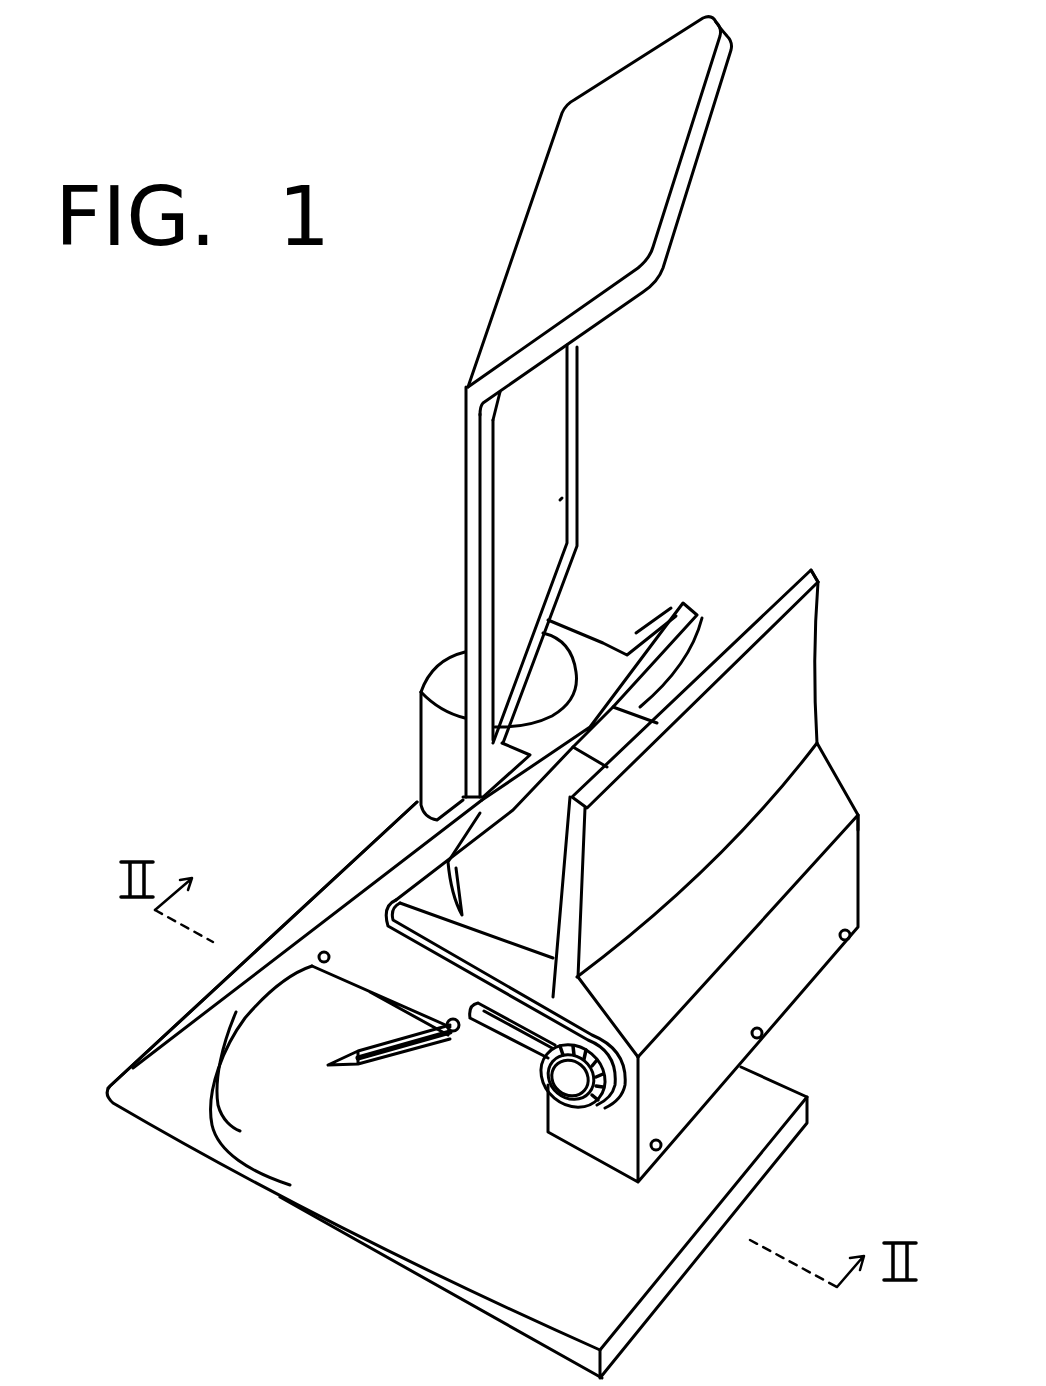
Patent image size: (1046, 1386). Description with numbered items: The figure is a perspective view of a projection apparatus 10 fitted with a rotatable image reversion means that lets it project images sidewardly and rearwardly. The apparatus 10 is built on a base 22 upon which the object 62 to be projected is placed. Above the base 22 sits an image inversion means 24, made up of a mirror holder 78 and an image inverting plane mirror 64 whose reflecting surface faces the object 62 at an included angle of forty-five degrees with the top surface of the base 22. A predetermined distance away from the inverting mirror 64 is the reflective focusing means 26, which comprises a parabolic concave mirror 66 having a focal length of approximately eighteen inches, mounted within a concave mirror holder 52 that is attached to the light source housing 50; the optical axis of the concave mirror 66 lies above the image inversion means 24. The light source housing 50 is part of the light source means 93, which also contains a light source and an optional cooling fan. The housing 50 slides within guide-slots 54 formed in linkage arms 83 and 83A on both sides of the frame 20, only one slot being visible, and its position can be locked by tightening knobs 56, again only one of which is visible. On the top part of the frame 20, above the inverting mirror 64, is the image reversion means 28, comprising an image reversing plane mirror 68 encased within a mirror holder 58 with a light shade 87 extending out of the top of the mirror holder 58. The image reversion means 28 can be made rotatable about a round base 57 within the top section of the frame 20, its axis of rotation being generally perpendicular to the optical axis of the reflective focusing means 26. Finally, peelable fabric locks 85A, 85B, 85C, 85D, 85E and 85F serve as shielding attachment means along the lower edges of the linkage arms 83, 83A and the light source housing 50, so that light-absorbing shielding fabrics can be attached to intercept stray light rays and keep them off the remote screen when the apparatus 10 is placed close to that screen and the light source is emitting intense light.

The apparatus 10 is at (213, 857).
The frame 20 is at (190, 1005).
The base 22 is at (673, 1233).
The image inversion means 24 is at (368, 824).
The reflective focusing means 26 is at (701, 855).
The image reversion means 28 is at (547, 407).
The light source housing 50 is at (805, 995).
The concave mirror holder 52 is at (811, 568).
The guide-slots 54 is at (520, 1048).
The knobs 56 is at (542, 1078).
The round base 57 is at (462, 690).
The mirror holder 58 is at (580, 382).
The object 62 is at (380, 1067).
The image inverting plane mirror 64 is at (478, 828).
The parabolic concave mirror 66 is at (566, 876).
The image reversing plane mirror 68 is at (556, 495).
The mirror holder 78 is at (645, 632).
The linkage arm 83 is at (392, 990).
The linkage arm 83A is at (703, 632).
The peelable fabric lock 85A is at (322, 963).
The peelable fabric lock 85B is at (458, 1032).
The peelable fabric lock 85C is at (600, 1110).
The peelable fabric lock 85D is at (662, 1146).
The peelable fabric lock 85E is at (763, 1036).
The peelable fabric lock 85F is at (851, 934).
The light shade 87 is at (693, 178).
The light source means 93 is at (882, 840).